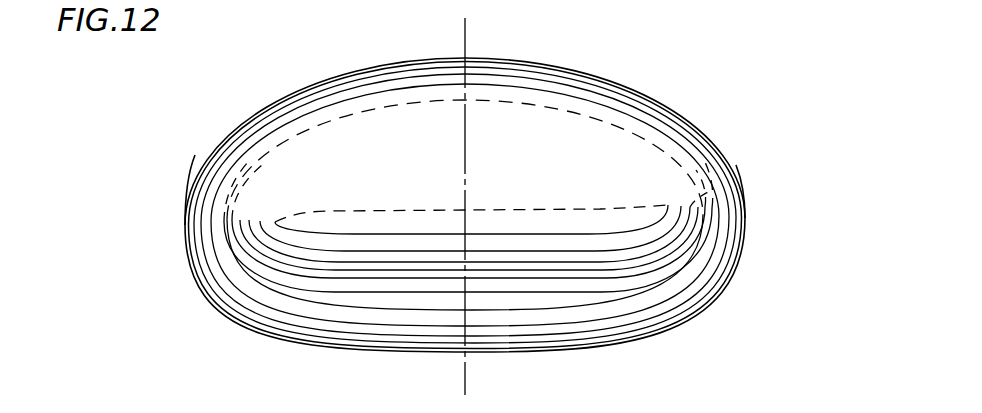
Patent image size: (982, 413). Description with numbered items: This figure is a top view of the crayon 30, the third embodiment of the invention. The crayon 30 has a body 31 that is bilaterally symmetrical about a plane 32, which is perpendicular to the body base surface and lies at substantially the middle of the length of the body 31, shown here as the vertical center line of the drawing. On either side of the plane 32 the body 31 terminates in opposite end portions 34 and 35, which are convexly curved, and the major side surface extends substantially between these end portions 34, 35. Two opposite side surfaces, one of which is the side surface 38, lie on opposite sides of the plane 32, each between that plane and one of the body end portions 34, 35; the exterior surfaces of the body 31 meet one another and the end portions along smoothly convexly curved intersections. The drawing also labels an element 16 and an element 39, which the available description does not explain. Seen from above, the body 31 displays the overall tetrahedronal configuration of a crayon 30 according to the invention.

The inner layers 16 is at (593, 298).
The crayon 30 is at (742, 116).
The body 31 is at (662, 179).
The plane 32 is at (465, 42).
The end portion 34 is at (187, 229).
The end portion 35 is at (742, 228).
The side surface 38 is at (595, 107).
The outer shell layer 39 is at (337, 107).